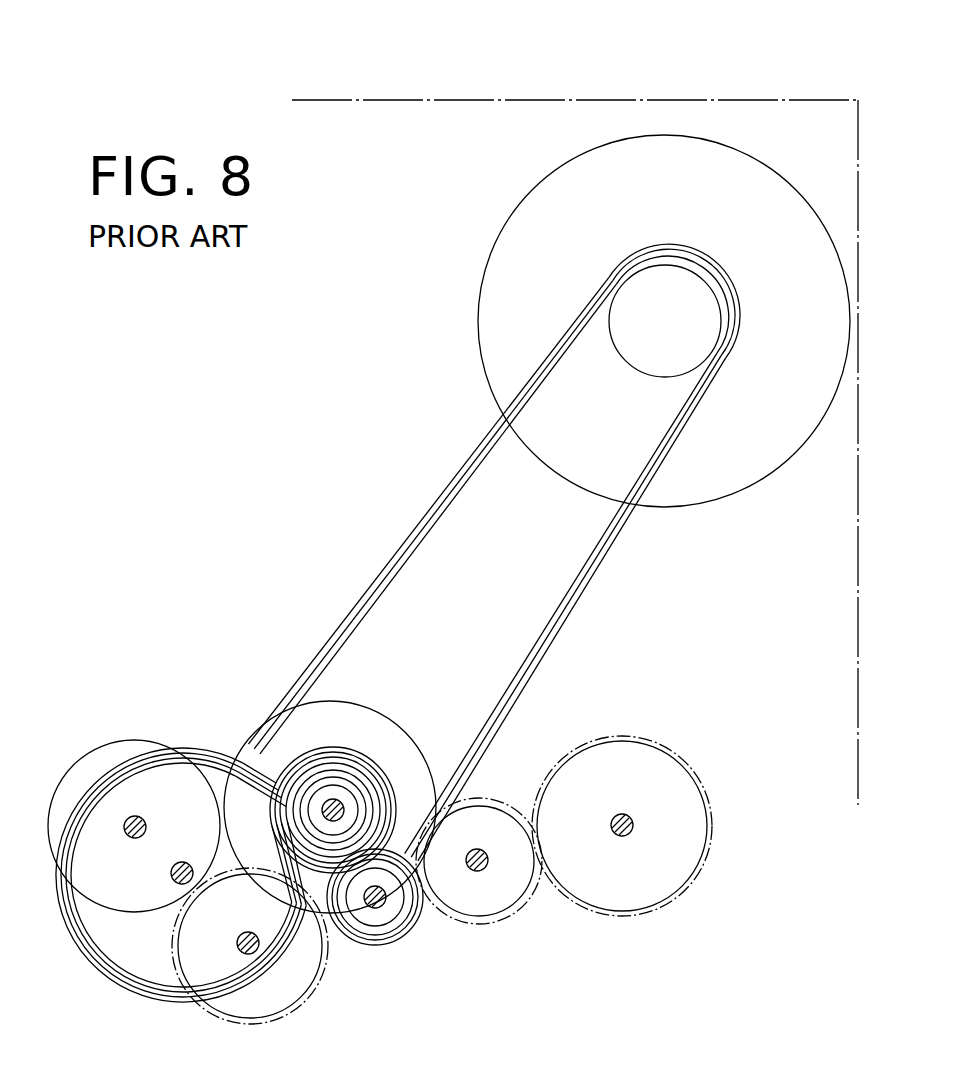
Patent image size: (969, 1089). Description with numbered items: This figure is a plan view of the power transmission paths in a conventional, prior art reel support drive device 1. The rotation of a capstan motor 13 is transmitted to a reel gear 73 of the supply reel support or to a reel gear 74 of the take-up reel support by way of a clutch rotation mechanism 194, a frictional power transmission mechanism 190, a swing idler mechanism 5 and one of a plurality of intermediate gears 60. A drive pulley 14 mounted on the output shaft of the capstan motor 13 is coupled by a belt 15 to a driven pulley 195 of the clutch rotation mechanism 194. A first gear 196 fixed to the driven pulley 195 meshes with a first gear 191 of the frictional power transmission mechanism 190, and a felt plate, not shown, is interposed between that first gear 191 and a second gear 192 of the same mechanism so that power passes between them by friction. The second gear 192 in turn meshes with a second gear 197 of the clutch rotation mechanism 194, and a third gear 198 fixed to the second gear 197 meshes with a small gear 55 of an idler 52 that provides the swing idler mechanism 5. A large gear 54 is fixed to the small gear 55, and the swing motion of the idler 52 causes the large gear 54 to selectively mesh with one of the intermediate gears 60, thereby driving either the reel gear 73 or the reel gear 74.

The image forming apparatus 1 is at (510, 97).
The capstan motor 13 is at (492, 298).
The drive pulley 14 is at (622, 300).
The belt 15 is at (407, 533).
The swing idler mechanism 5 is at (360, 822).
The idler 52 is at (380, 920).
The large gear 54 is at (363, 945).
The small gear 55 is at (403, 923).
The intermediate gears 60 is at (293, 995).
The reel gear 73 is at (124, 752).
The reel gear 74 is at (650, 763).
The frictional power transmission mechanism 190 is at (168, 795).
The first gear 191 is at (177, 1003).
The second gear 192 is at (207, 757).
The clutch rotation mechanism 194 is at (278, 732).
The driven pulley 195 is at (383, 723).
The first gear 196 is at (365, 770).
The second gear 197 is at (350, 752).
The third gear 198 is at (327, 746).